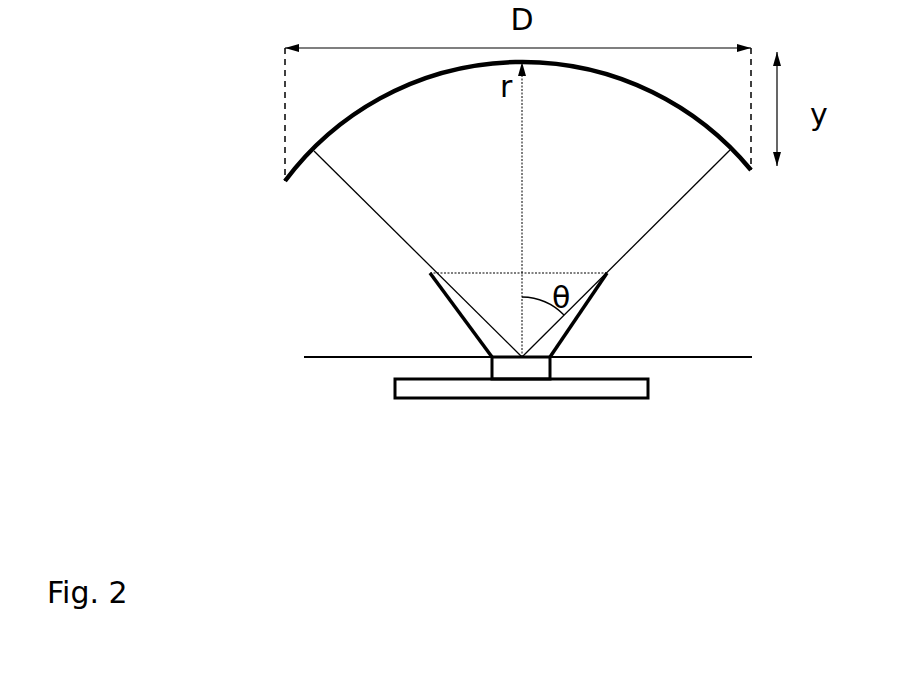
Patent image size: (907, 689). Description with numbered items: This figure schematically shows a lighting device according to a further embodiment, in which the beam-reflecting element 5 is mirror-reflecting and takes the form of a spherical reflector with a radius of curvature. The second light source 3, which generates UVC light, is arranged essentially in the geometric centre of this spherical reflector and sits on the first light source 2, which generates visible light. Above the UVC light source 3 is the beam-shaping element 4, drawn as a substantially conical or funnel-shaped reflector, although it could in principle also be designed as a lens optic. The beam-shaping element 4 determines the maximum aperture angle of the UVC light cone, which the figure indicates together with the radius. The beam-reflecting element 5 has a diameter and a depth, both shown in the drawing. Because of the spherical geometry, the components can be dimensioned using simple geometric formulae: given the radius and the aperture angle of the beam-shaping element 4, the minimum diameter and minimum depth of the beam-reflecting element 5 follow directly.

The first light source 2 is at (497, 392).
The second light source 3 is at (532, 370).
The beam-shaping element 4 is at (580, 319).
The beam-reflecting element 5 is at (752, 176).